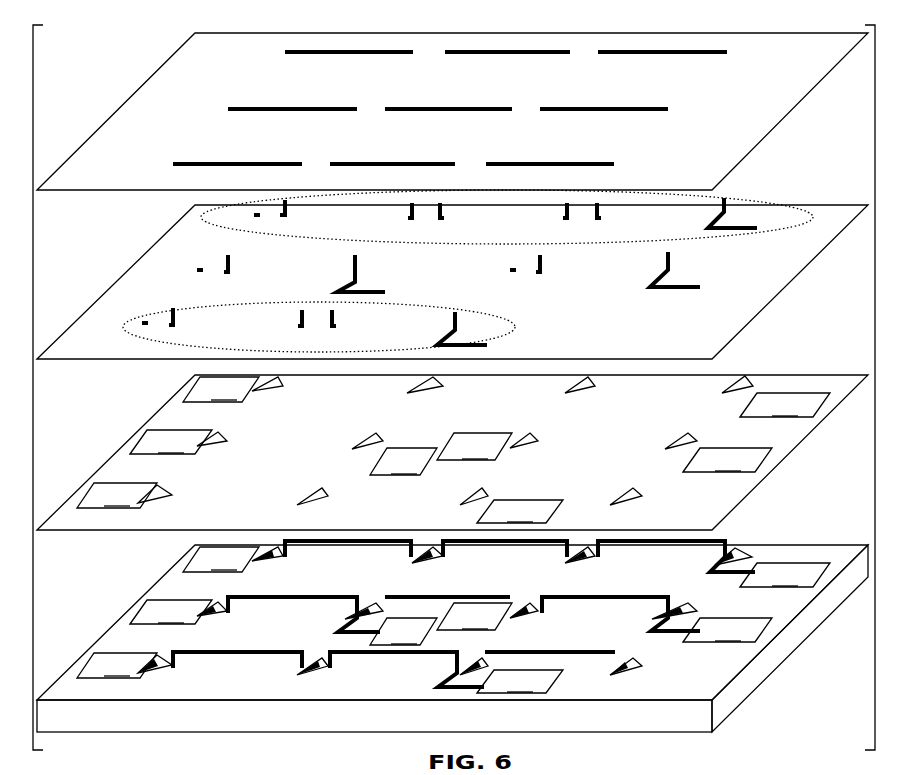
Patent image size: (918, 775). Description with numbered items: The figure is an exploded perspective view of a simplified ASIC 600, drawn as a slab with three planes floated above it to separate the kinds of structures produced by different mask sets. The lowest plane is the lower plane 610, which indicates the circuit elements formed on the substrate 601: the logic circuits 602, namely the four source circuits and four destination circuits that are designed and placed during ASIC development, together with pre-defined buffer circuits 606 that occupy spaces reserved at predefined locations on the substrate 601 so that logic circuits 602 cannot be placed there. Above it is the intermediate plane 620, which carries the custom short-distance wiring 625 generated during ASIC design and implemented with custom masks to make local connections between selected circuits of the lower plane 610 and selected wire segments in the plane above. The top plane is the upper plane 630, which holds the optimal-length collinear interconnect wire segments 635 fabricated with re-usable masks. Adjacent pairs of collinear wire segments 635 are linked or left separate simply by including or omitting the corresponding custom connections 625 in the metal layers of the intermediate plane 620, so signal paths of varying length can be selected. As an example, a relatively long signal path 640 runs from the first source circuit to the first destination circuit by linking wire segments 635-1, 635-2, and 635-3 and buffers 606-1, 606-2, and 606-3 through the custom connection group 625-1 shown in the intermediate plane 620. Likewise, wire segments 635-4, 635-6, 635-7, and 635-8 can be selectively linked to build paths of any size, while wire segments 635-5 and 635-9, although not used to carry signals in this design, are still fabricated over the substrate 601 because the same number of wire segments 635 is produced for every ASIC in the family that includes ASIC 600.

The simplified ASIC 600 is at (288, 746).
The substrate 601 is at (130, 712).
The logic circuits 602 is at (152, 430).
The buffer circuits 606 is at (630, 667).
The buffer 606-1 is at (276, 386).
The buffer 606-2 is at (435, 386).
The buffer 606-3 is at (585, 386).
The lower plane 610 is at (85, 538).
The intermediate plane 620 is at (85, 368).
The custom short-distance wiring 625 is at (300, 320).
The custom connection group 625-1 is at (692, 238).
The upper plane 630 is at (122, 198).
The wire segments 635 is at (205, 163).
The wire segment 635-1 is at (400, 53).
The wire segment 635-2 is at (518, 53).
The wire segment 635-3 is at (628, 53).
The wire segment 635-4 is at (250, 599).
The wire segment 635-5 is at (463, 595).
The wire segment 635-6 is at (562, 599).
The wire segment 635-7 is at (210, 654).
The wire segment 635-8 is at (348, 654).
The wire segment 635-9 is at (592, 650).
The signal path 640 is at (745, 536).